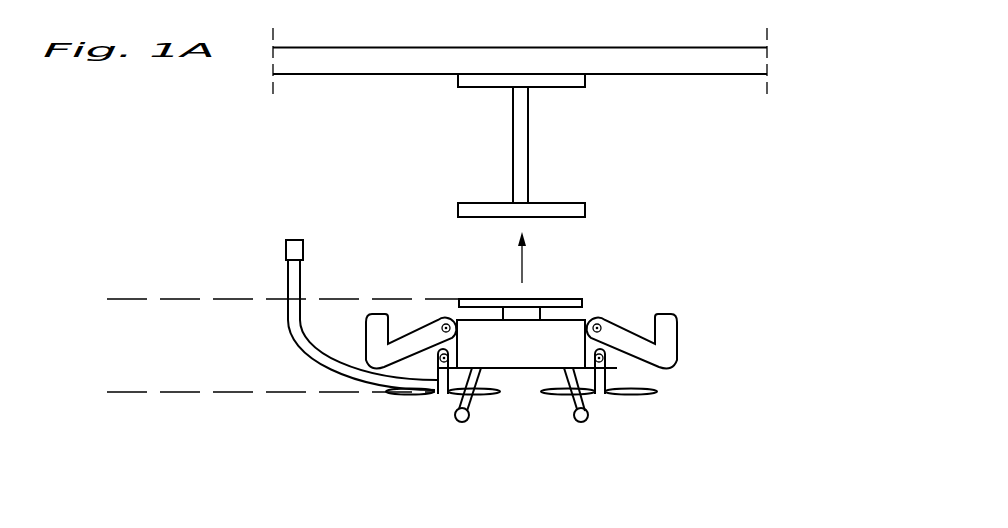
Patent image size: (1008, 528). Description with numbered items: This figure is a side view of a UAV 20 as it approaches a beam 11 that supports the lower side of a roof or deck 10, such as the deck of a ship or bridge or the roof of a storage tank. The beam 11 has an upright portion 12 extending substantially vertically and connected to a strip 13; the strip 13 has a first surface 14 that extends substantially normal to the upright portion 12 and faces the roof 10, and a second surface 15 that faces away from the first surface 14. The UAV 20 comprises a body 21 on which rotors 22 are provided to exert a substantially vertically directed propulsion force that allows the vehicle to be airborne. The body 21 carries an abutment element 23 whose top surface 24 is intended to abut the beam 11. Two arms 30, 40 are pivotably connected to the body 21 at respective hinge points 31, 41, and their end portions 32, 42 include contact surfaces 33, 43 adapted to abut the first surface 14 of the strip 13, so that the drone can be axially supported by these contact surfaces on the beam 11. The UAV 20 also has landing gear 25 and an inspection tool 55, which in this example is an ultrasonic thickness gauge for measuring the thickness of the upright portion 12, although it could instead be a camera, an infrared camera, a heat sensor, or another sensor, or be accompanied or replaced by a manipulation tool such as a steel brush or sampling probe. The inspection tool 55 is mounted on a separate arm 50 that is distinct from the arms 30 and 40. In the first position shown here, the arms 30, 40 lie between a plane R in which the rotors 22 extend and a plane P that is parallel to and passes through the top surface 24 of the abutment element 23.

The roof or deck 10 is at (655, 58).
The beam 11 is at (498, 155).
The upright portion 12 is at (522, 138).
The strip 13 is at (582, 210).
The first surface 14 is at (559, 196).
The second surface 15 is at (549, 232).
The UAV 20 is at (762, 363).
The body 21 is at (612, 358).
The rotors 22 is at (545, 394).
The abutment element 23 is at (582, 299).
The top surface 24 is at (490, 299).
The landing gear 25 is at (587, 416).
The arm 30 is at (409, 333).
The hinge point 31 is at (448, 318).
The end portion 32 is at (378, 338).
The contact surface 33 is at (373, 313).
The arm 40 is at (630, 342).
The hinge point 41 is at (607, 317).
The end portion 42 is at (678, 340).
The contact surface 43 is at (672, 313).
The arm 50 is at (364, 382).
The inspection tool 55 is at (290, 250).
The plane P is at (140, 298).
The plane R is at (137, 394).